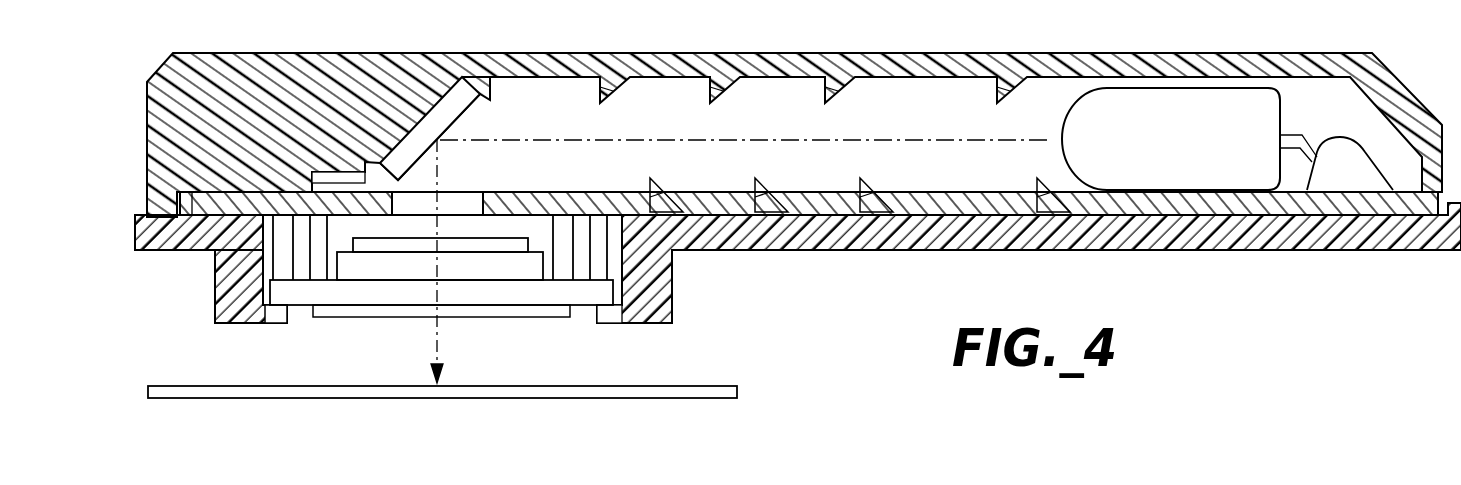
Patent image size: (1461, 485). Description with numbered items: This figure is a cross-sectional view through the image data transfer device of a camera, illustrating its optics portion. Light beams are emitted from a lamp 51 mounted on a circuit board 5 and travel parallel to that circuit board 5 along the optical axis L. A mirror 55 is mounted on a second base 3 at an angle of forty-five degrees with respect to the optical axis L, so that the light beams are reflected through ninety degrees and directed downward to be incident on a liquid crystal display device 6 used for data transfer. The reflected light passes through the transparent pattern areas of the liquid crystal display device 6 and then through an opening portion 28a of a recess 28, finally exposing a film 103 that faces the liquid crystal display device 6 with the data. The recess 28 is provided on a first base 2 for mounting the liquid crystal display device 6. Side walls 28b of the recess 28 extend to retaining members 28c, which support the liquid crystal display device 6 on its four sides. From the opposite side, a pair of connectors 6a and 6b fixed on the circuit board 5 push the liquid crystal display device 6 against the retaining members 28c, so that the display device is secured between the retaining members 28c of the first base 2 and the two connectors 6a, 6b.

The first base 2 is at (813, 232).
The second base 3 is at (543, 65).
The circuit board 5 is at (1180, 205).
The liquid crystal display device 6 is at (450, 298).
The connector 6a is at (302, 267).
The connector 6b is at (597, 258).
The recess 28 is at (262, 200).
The opening portion 28a is at (297, 313).
The side wall 28b is at (238, 288).
The retaining member 28c is at (277, 322).
The lamp 51 is at (1170, 103).
The mirror 55 is at (432, 120).
The film 103 is at (494, 388).
The optical axis L is at (793, 126).